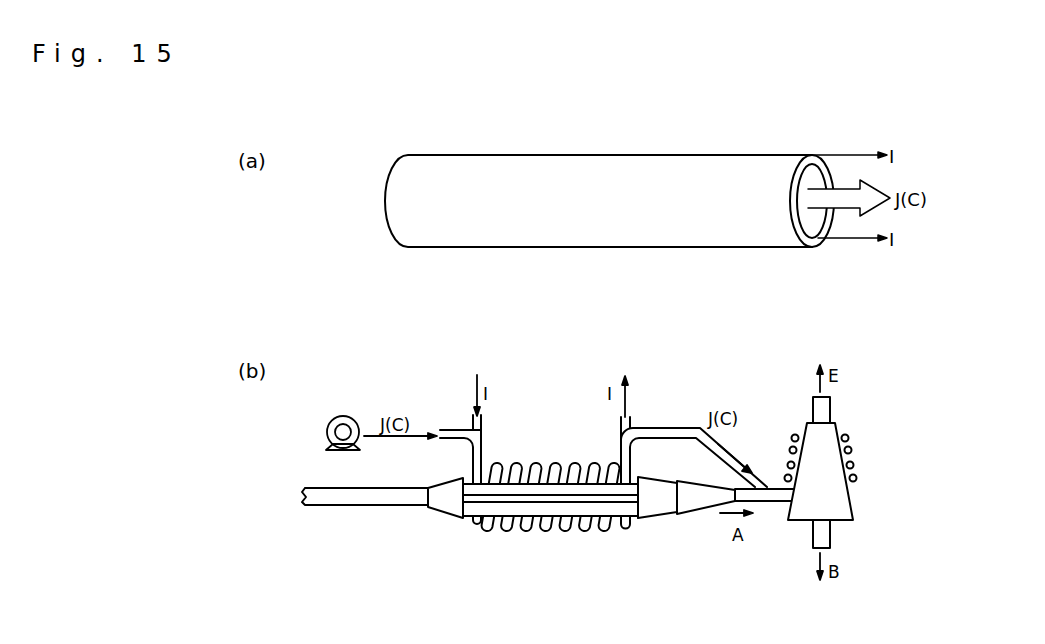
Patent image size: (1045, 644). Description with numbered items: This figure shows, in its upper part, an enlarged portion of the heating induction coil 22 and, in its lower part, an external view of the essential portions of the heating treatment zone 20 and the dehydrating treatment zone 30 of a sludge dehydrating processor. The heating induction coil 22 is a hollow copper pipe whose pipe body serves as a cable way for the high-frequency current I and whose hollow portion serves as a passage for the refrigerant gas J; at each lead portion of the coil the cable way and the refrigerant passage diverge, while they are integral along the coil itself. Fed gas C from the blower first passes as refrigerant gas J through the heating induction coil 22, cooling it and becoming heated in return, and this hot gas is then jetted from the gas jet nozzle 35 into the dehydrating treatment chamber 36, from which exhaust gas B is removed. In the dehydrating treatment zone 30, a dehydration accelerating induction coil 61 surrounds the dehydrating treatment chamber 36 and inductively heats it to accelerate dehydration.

The heating treatment zone 20 is at (500, 551).
The heating induction coil 22 is at (386, 210).
The dehydrating treatment zone 30 is at (865, 459).
The gas jet nozzle 35 is at (775, 507).
The dehydrating treatment chamber 36 is at (855, 506).
The dehydration accelerating induction coil 61 is at (857, 462).